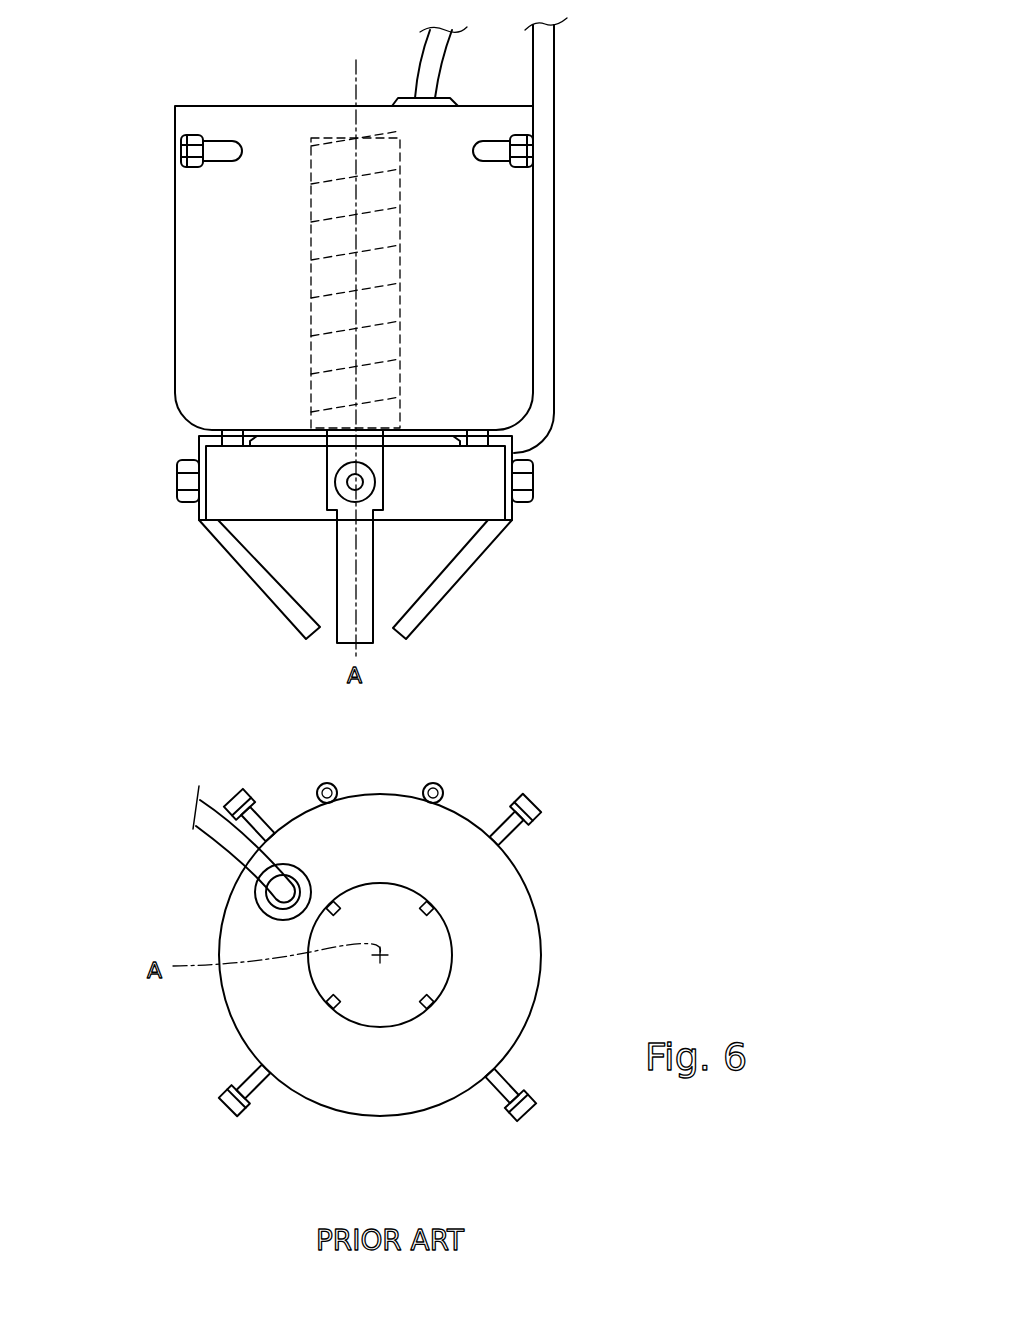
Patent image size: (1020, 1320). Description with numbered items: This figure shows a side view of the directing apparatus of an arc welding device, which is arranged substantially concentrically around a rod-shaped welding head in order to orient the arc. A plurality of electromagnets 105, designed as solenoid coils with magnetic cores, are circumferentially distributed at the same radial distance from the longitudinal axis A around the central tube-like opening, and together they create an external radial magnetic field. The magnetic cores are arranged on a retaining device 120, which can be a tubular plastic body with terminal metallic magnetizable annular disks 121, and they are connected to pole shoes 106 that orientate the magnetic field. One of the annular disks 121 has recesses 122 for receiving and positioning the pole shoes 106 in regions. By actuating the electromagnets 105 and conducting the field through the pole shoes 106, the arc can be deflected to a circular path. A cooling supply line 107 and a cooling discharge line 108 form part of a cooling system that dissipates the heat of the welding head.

The electromagnets 105 is at (318, 280).
The pole shoes 106 is at (442, 587).
The cooling supply line 107 is at (545, 367).
The cooling discharge line 108 is at (327, 783).
The retaining device 120 is at (452, 950).
The annular disks 121 is at (485, 482).
The recesses 122 is at (323, 480).